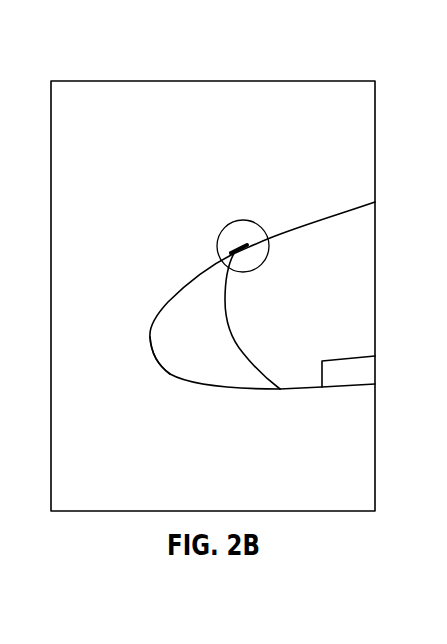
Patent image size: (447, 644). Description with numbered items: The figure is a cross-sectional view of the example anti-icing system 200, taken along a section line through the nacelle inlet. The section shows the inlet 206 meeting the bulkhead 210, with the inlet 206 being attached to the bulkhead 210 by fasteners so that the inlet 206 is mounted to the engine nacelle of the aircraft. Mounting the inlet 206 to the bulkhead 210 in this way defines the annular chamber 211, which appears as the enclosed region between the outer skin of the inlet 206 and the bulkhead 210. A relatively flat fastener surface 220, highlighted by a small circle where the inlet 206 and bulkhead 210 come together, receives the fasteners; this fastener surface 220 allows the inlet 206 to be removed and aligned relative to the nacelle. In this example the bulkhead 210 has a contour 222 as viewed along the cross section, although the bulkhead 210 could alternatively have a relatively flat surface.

The anti-icing system 200 is at (91, 53).
The inlet 206 is at (150, 348).
The bulkhead 210 is at (243, 350).
The annular chamber 211 is at (175, 317).
The fastener surface 220 is at (247, 242).
The contour 222 is at (231, 295).